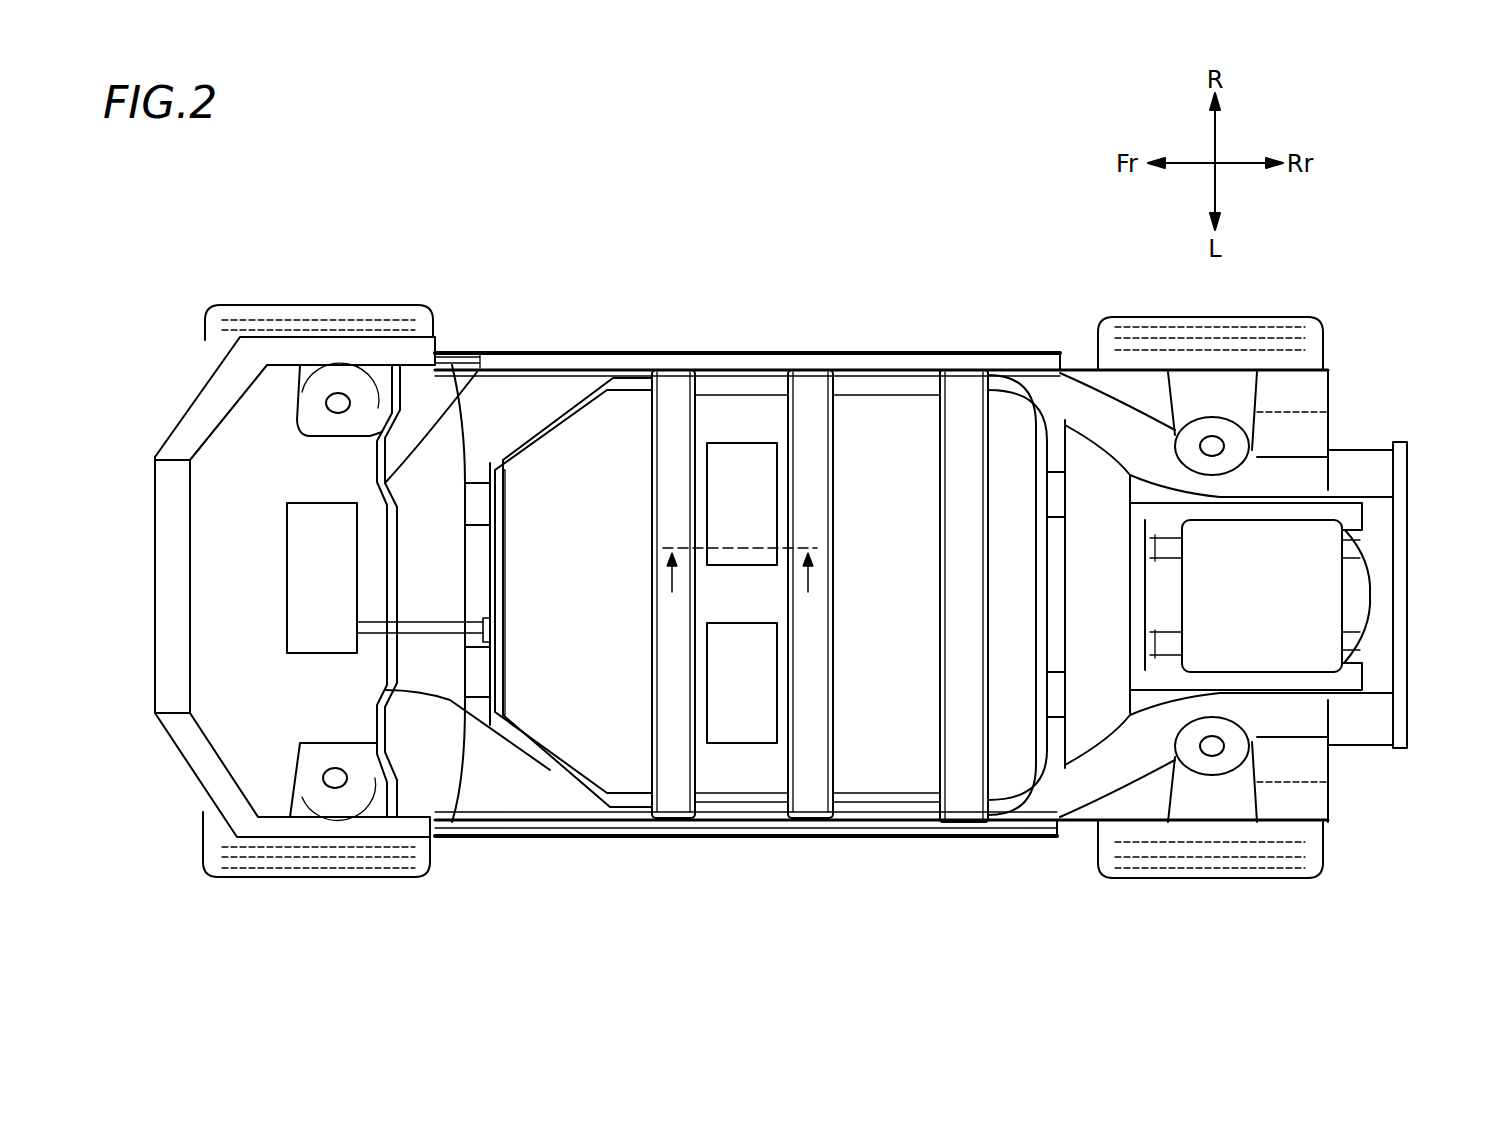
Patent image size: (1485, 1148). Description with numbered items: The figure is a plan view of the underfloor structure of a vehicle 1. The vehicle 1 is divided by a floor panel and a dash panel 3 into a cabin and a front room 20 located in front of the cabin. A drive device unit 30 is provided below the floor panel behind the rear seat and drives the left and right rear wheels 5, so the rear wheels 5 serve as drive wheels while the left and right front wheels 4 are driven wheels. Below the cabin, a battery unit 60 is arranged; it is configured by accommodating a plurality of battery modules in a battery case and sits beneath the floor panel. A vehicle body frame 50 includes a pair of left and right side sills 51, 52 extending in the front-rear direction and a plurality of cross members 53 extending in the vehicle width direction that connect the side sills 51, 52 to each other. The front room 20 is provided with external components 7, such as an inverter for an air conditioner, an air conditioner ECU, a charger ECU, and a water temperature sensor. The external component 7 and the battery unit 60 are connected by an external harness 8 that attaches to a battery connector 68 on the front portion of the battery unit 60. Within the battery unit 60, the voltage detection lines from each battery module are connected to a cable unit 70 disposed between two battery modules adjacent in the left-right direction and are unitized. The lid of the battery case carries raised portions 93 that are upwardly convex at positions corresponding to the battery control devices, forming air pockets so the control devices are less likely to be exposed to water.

The vehicle 1 is at (835, 256).
The dash panel 3 is at (387, 460).
The front wheels 4 is at (358, 302).
The rear wheels 5 is at (1253, 312).
The external component 7 is at (305, 537).
The external harness 8 is at (372, 625).
The front room 20 is at (264, 611).
The drive device unit 30 is at (1283, 588).
The vehicle body frame 50 is at (917, 356).
The side sill 51 is at (848, 354).
The side sill 52 is at (893, 823).
The cross member 53 is at (425, 530).
The battery unit 60 is at (630, 427).
The battery connector 68 is at (505, 630).
The cable unit 70 is at (152, 592).
The raised portion 93 is at (745, 470).